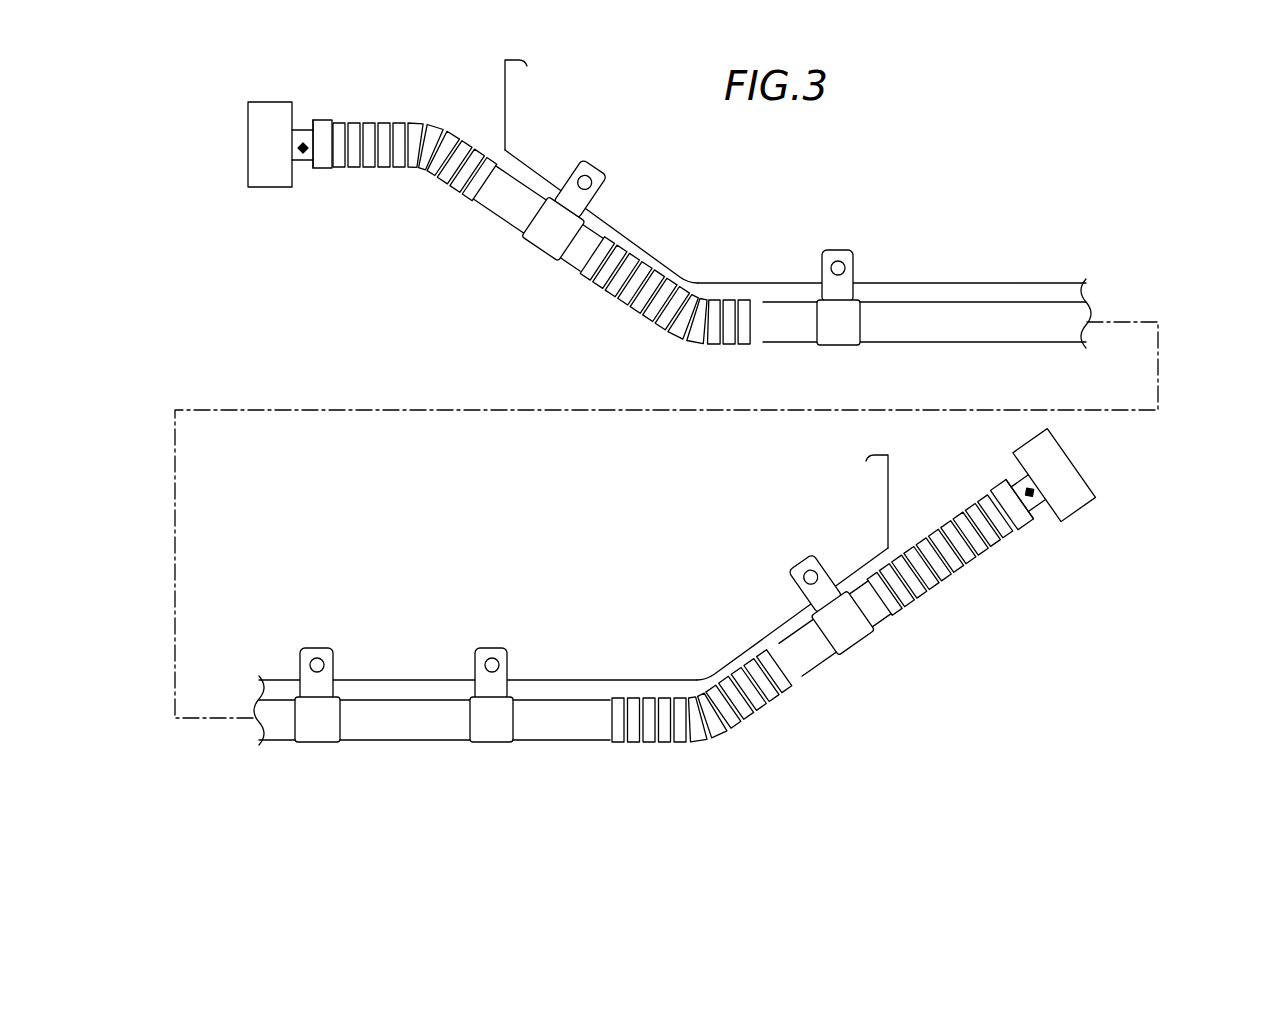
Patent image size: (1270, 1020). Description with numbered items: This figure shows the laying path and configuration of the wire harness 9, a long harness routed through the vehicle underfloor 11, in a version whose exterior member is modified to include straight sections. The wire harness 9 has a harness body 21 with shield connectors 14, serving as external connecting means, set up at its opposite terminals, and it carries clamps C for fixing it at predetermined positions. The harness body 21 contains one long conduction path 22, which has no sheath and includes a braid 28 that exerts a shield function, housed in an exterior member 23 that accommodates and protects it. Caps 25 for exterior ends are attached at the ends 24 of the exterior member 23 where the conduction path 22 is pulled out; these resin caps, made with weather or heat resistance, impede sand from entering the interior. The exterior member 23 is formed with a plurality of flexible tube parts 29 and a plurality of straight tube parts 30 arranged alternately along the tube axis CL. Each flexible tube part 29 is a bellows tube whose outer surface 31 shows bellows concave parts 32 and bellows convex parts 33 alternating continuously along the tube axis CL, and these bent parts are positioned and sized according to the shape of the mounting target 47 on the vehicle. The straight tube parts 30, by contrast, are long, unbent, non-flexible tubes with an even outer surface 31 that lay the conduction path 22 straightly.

The wire harness 9 is at (478, 283).
The vehicle underfloor 11 is at (1025, 290).
The shield connector 14 is at (275, 182).
The harness body 21 is at (935, 343).
The conduction path 22 is at (301, 130).
The exterior member 23 is at (1060, 308).
The end of exterior member 24 is at (325, 128).
The cap for exterior end 25 is at (326, 170).
The braid 28 is at (304, 157).
The flexible tube part 29 is at (395, 120).
The straight tube part 30 is at (592, 248).
The outer surface 31 is at (728, 300).
The bellows concave part 32 is at (727, 346).
The bellows convex part 33 is at (748, 346).
The mounting target 47 is at (503, 118).
The clamp C is at (552, 244).
The tube axis CL is at (1160, 350).